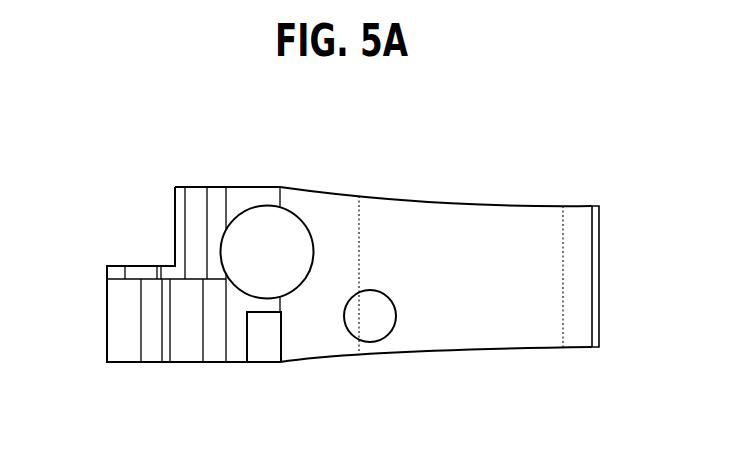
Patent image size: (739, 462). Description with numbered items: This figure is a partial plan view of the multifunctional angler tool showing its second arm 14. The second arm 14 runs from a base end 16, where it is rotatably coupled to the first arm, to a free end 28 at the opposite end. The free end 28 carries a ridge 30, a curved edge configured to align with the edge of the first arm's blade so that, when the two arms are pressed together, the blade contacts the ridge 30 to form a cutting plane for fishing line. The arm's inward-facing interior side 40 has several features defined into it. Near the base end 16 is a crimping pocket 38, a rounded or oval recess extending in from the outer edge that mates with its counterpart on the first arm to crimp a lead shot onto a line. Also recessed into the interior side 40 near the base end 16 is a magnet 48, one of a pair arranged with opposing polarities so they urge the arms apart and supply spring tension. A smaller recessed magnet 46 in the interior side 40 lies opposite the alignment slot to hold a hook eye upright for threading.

The second arm 14 is at (516, 156).
The base end 16 is at (125, 322).
The free end 28 is at (578, 364).
The ridge 30 is at (593, 273).
The crimping pocket 38 is at (269, 329).
The interior side 40 is at (490, 290).
The recessed magnet 46 is at (372, 315).
The magnet 48 is at (262, 243).